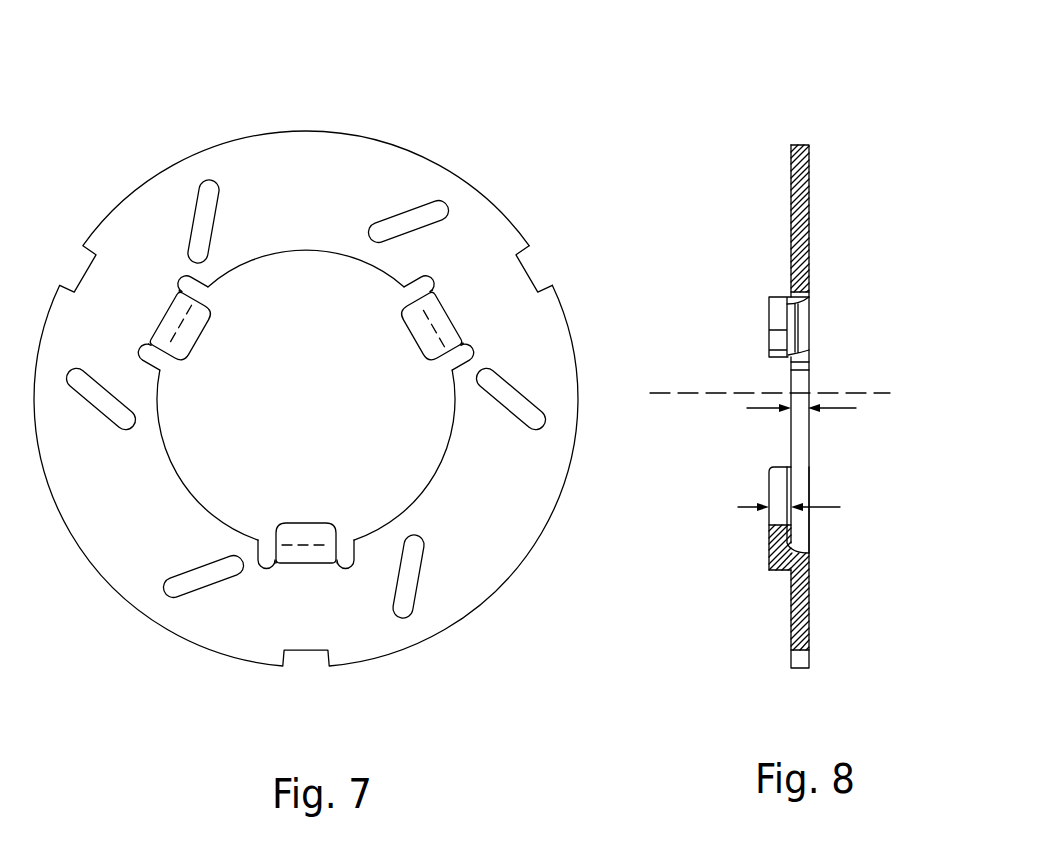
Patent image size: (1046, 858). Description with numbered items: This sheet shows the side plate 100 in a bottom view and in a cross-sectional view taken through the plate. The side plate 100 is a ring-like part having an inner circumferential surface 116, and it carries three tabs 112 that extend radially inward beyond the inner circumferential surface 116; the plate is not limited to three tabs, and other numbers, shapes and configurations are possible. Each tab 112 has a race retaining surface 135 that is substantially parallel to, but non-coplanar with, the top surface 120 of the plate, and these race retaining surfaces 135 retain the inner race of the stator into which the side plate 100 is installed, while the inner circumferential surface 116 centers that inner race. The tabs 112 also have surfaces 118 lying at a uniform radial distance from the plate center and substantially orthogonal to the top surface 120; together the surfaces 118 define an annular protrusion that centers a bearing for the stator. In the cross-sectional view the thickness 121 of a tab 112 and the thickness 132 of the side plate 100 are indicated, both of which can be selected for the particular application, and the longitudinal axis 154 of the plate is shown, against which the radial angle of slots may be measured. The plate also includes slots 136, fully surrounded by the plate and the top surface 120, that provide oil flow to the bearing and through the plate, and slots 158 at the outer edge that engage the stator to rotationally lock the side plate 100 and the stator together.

In FIG. 7, the side plate 100 is at (204, 96).
In FIG. 8, the side plate 100 is at (742, 158).
In FIG. 7, the tab 112 is at (293, 528).
In FIG. 8, the tab 112 is at (769, 478).
In FIG. 7, the inner circumferential surface 116 is at (316, 259).
In FIG. 8, the surface 118 is at (781, 571).
In FIG. 8, the top surface 120 is at (791, 614).
In FIG. 8, the thickness 121 is at (761, 509).
In FIG. 8, the thickness 132 is at (827, 410).
In FIG. 8, the race retaining surface 135 is at (794, 486).
In FIG. 7, the slot 136 is at (405, 223).
In FIG. 8, the longitudinal axis 154 is at (738, 392).
In FIG. 7, the slot 158 is at (538, 264).